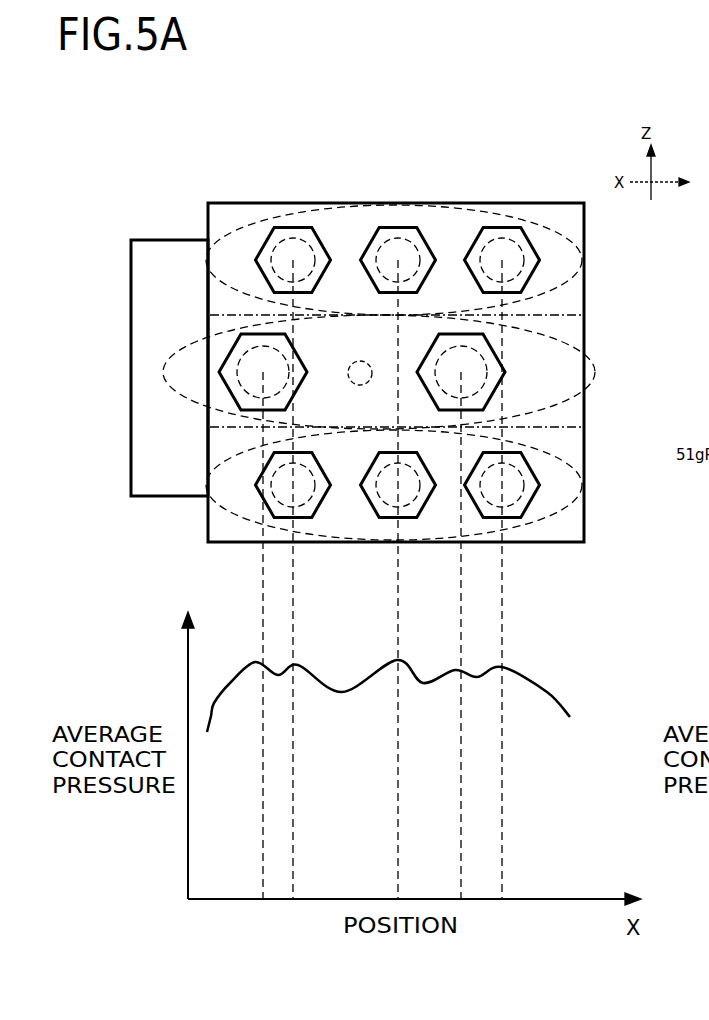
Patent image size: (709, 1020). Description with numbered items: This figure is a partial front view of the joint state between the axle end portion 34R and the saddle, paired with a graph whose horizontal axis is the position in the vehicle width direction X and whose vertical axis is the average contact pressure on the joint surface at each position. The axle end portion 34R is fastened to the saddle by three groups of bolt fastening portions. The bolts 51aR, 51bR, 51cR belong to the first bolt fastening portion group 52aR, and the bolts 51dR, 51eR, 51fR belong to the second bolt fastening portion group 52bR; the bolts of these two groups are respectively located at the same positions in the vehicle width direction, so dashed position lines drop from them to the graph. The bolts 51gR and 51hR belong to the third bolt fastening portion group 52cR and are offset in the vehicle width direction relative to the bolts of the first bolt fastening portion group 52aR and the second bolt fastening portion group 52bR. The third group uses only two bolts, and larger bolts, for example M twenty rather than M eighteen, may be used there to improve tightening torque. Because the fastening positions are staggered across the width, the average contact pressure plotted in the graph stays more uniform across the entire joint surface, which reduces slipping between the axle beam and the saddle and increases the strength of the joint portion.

The axle end portion 34R is at (240, 240).
The bolt 51aR is at (272, 482).
The bolt 51bR is at (378, 490).
The bolt 51cR is at (518, 501).
The bolt 51dR is at (288, 248).
The bolt 51eR is at (410, 258).
The bolt 51fR is at (517, 257).
The bolt 51gR is at (247, 372).
The bolt 51hR is at (487, 368).
The first bolt fastening portion group 52aR is at (552, 512).
The second bolt fastening portion group 52bR is at (578, 296).
The third bolt fastening portion group 52cR is at (567, 398).